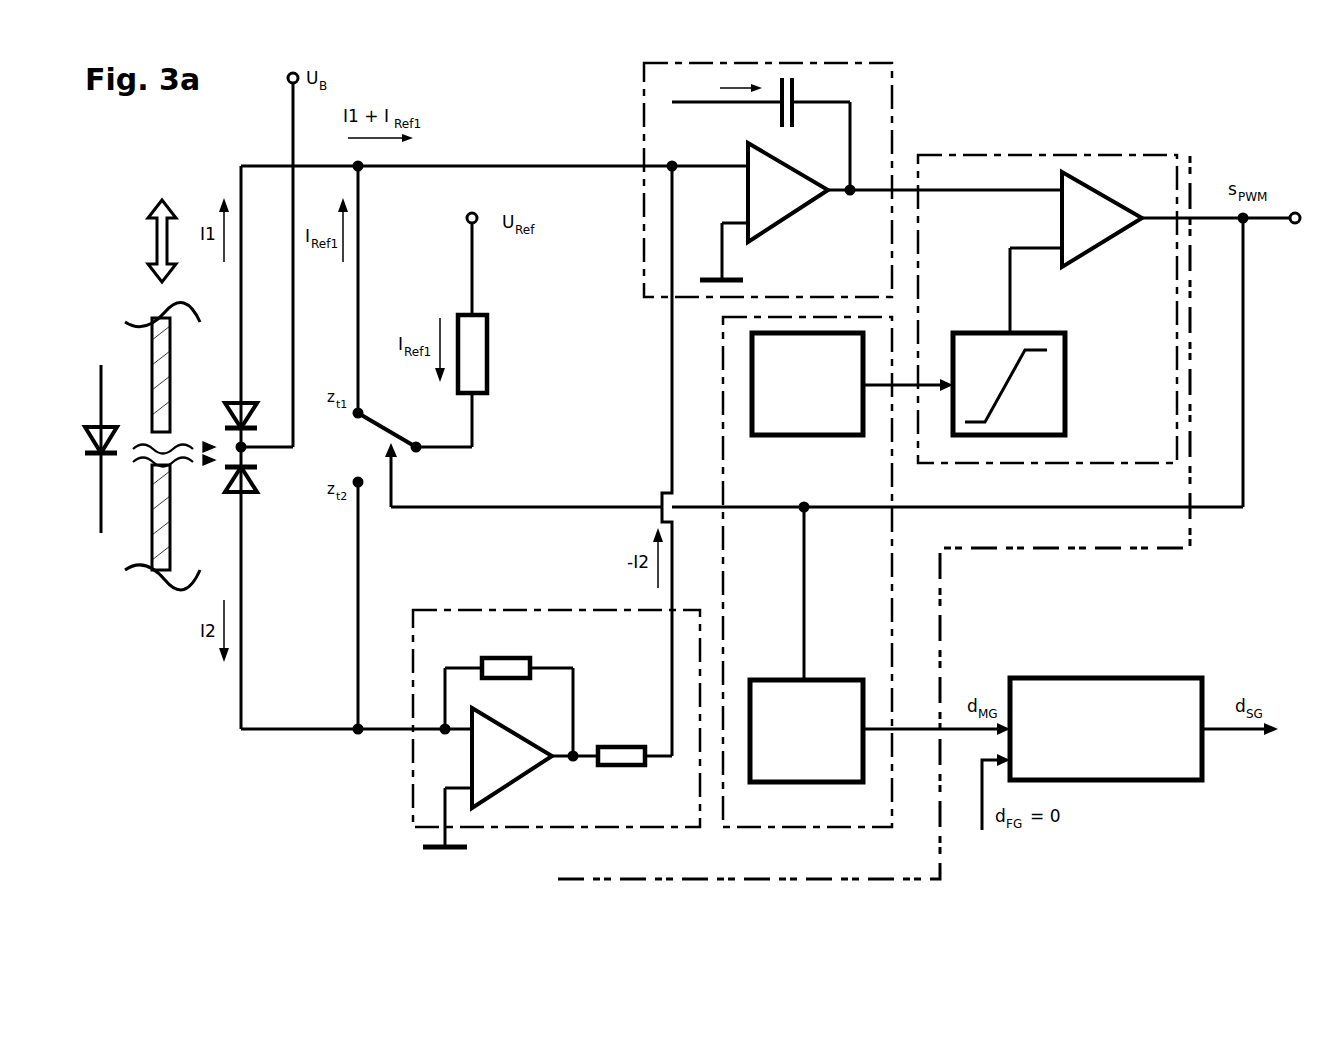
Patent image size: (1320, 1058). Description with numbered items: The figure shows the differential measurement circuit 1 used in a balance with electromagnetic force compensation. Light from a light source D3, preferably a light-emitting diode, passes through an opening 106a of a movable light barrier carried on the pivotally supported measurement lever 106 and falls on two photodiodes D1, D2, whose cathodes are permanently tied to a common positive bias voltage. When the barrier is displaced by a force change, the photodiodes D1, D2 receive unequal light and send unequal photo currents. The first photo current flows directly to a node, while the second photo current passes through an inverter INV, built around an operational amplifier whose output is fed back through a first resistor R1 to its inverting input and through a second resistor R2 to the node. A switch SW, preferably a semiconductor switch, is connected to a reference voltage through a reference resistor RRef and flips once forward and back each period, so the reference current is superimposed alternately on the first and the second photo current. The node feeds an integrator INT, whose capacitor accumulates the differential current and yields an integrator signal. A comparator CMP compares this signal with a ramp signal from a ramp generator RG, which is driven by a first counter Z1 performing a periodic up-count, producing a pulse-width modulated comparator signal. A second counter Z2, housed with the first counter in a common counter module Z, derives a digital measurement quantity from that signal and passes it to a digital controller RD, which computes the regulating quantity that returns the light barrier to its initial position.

The differential measurement circuit 1 is at (928, 866).
The measurement lever 106 is at (148, 580).
The opening 106a is at (173, 440).
The first photodiode D1 is at (251, 398).
The second photodiode D2 is at (251, 499).
The light source D3 is at (101, 429).
The switch SW is at (376, 438).
The reference resistor RRef is at (473, 330).
The first resistor R1 is at (506, 653).
The second resistor R2 is at (621, 743).
The integrator INT is at (768, 180).
The comparator CMP is at (1047, 309).
The ramp generator RG is at (1009, 384).
The counter module Z is at (807, 572).
The first counter Z1 is at (807, 384).
The second counter Z2 is at (806, 731).
The inverter INV is at (556, 718).
The digital controller RD is at (1106, 729).